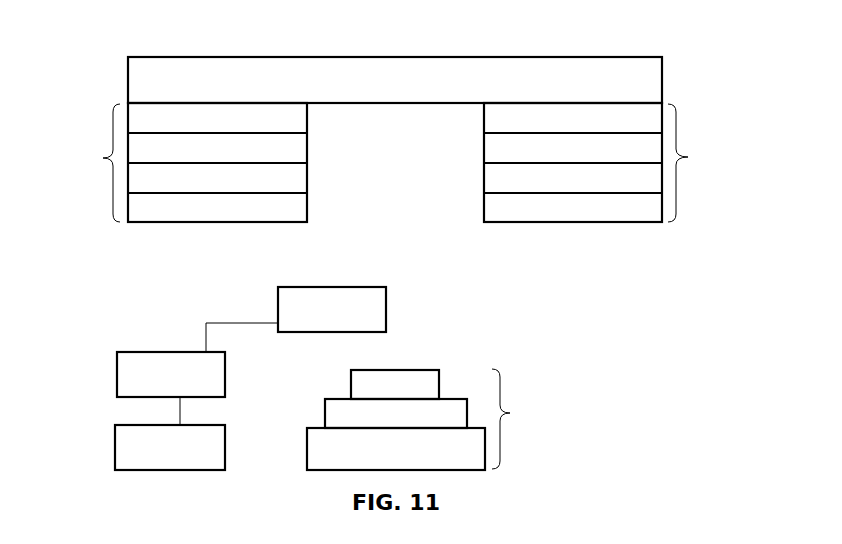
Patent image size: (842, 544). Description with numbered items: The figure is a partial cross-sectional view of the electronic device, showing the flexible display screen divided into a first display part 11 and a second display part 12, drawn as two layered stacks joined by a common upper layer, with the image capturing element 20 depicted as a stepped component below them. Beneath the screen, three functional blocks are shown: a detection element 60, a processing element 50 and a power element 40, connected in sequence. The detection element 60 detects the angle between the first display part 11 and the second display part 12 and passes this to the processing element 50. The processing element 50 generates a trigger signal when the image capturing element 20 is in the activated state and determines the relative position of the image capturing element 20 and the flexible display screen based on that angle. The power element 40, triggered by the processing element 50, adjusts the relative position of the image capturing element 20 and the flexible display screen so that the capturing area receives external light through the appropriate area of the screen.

The first display part 11 is at (95, 120).
The second display part 12 is at (690, 117).
The image capturing element 20 is at (515, 410).
The power element 40 is at (225, 423).
The processing element 50 is at (145, 352).
The detection element 60 is at (352, 288).